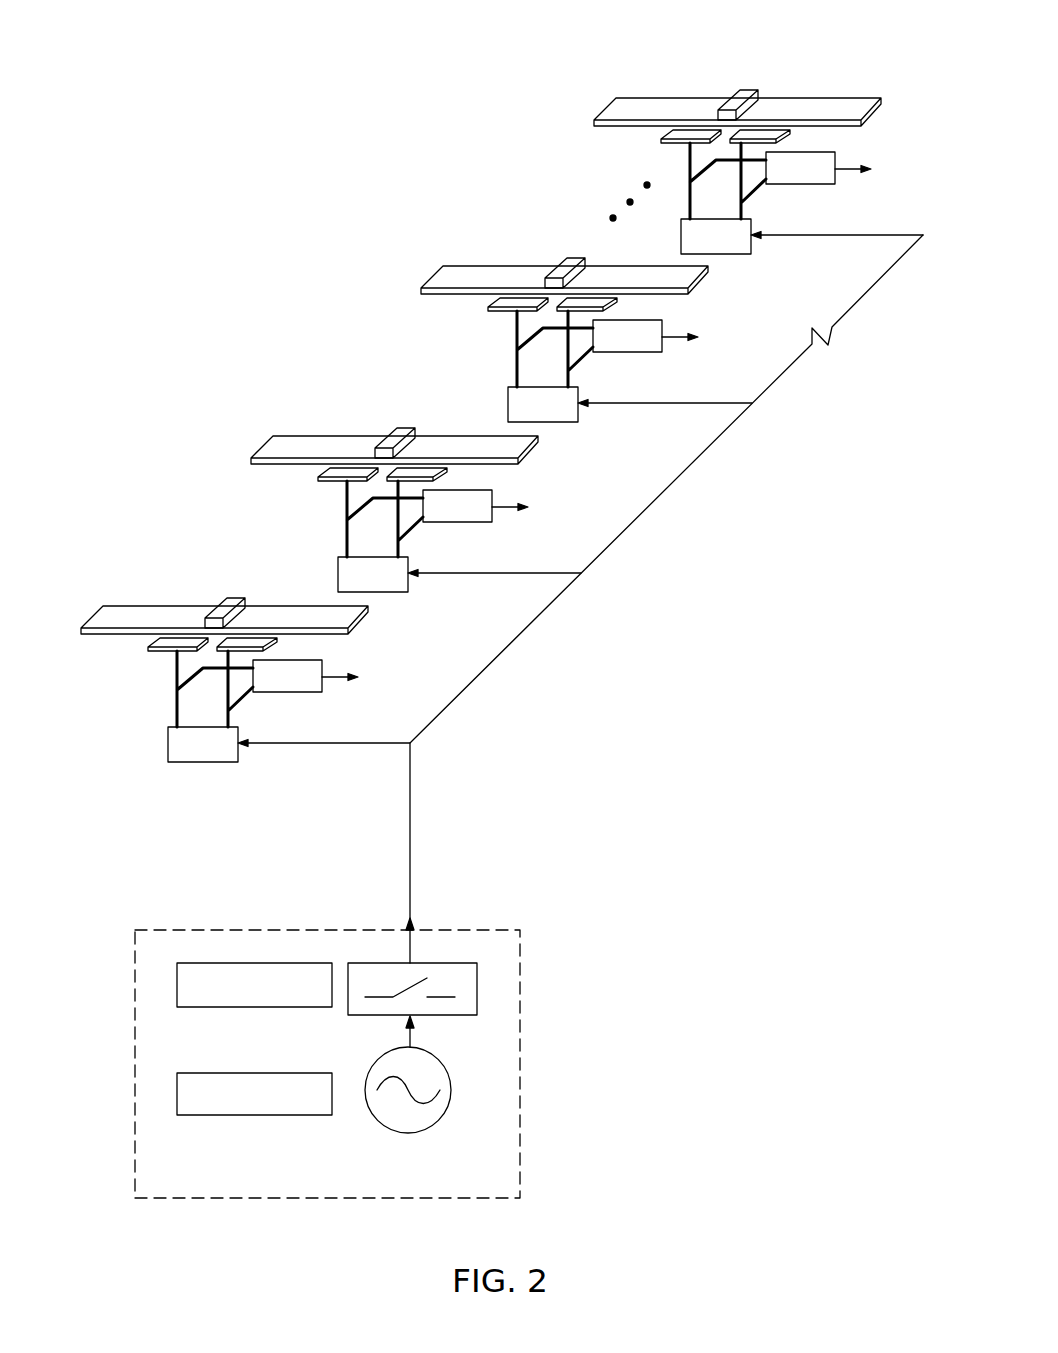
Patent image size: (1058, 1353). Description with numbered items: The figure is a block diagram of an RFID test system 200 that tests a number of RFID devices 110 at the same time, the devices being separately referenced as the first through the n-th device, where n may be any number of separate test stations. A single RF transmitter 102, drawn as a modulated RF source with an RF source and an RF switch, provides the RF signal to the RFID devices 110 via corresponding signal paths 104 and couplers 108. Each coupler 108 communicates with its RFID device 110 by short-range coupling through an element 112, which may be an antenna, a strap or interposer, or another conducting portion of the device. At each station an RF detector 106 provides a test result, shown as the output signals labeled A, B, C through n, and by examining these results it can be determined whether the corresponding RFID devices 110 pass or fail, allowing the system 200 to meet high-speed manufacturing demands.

The RF transmitter 102 is at (193, 929).
The signal path 104 is at (170, 706).
The RF detector 106 is at (290, 693).
The coupler 108 is at (153, 660).
The RFID device 110 is at (231, 594).
The element 112 is at (112, 613).
The RFID test system 200 is at (607, 819).